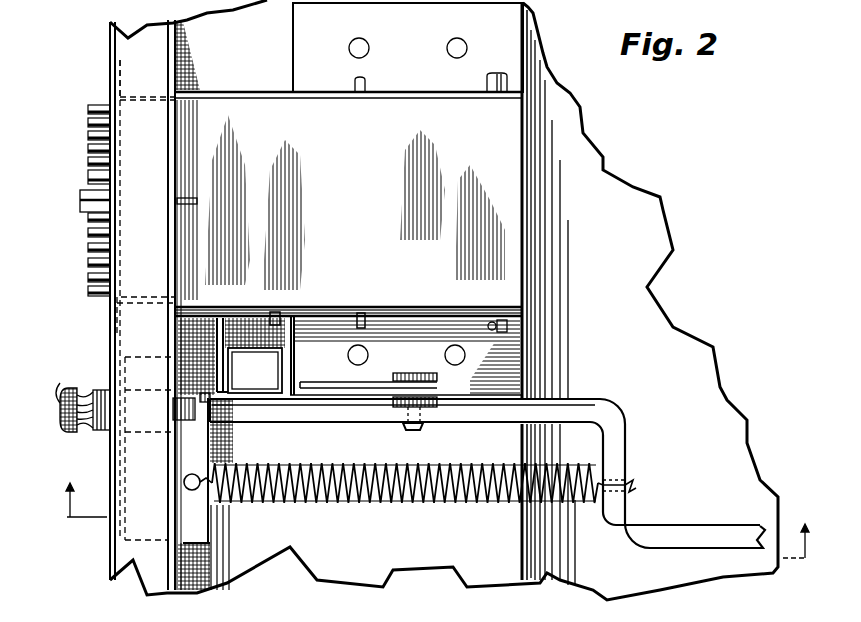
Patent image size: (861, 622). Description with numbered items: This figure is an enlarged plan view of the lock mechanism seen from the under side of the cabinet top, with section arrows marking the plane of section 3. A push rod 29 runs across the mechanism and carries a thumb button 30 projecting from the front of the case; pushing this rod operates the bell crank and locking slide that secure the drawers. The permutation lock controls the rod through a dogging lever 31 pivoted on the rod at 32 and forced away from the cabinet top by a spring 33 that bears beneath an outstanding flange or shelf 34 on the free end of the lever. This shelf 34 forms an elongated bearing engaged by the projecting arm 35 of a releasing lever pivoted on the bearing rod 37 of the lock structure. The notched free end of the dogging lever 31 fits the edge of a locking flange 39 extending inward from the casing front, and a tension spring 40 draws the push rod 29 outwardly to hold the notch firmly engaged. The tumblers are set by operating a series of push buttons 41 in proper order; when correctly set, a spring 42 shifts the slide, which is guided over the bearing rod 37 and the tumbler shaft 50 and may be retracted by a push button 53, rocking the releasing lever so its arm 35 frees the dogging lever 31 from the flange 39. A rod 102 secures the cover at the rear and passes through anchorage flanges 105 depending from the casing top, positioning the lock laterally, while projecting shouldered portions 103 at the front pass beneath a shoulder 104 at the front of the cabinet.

The push rod 29 is at (692, 532).
The thumb button 30 is at (83, 397).
The dogging lever 31 is at (330, 400).
The pivot 32 is at (417, 428).
The spring 33 is at (292, 393).
The outstanding flange or shelf 34 is at (255, 370).
The projecting arm 35 is at (223, 384).
The bearing rod 37 is at (317, 294).
The locking flange 39 is at (205, 494).
The tension spring 40 is at (403, 502).
The push buttons 41 is at (88, 170).
The spring 42 is at (190, 203).
The tumbler shaft 50 is at (370, 314).
The push button 53 is at (80, 203).
The rod 102 is at (497, 333).
The projecting shouldered portions 103 is at (148, 97).
The shoulder 104 is at (125, 362).
The anchorage flanges 105 is at (455, 92).
The section line 3 is at (437, 511).